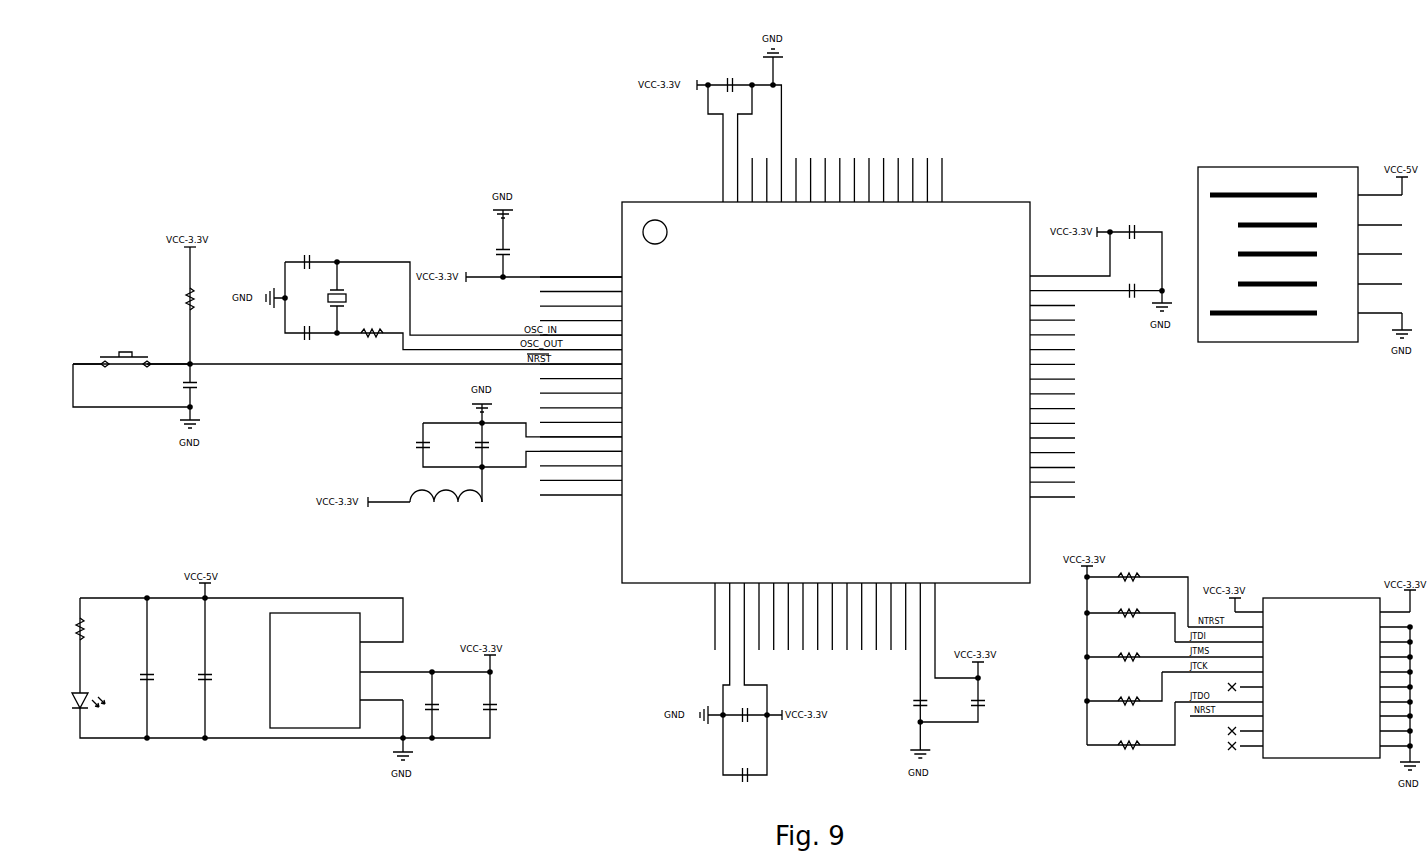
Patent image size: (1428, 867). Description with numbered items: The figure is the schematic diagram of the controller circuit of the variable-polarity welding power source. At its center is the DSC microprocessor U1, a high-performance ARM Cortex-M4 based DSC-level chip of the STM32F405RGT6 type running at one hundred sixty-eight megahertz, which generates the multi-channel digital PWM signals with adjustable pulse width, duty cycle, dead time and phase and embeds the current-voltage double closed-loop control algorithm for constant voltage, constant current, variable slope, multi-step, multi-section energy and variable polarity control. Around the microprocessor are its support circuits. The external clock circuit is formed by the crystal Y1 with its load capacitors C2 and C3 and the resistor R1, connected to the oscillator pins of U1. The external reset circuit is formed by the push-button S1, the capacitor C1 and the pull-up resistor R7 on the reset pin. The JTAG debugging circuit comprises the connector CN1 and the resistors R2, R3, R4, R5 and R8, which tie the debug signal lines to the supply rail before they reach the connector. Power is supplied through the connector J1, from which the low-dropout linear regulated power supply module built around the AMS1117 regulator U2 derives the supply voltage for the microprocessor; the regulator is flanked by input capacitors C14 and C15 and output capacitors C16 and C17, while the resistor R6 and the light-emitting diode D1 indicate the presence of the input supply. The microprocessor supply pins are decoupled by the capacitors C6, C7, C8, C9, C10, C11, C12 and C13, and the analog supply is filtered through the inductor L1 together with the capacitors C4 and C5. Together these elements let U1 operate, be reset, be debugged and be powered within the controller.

The DSC microprocessor U1 is at (820, 391).
The AMS1117 low-dropout linear regulator U2 is at (311, 670).
The mini-USB-B connector J1 is at (1299, 256).
The JTAG debugging connector CN1 is at (1248, 680).
The reset switch S1 is at (131, 361).
The crystal Y1 is at (344, 297).
The inductor L1 is at (446, 494).
The LED D1 is at (98, 700).
The clock circuit resistor R1 is at (372, 328).
The JTAG resistor R2 is at (1129, 608).
The JTAG resistor R3 is at (1129, 652).
The JTAG resistor R4 is at (1129, 696).
The JTAG resistor R5 is at (1129, 740).
The resistor R6 is at (87, 629).
The reset circuit resistor R7 is at (197, 305).
The JTAG resistor R8 is at (1129, 572).
The reset capacitor C1 is at (196, 385).
The clock circuit capacitor C2 is at (306, 254).
The capacitor C3 is at (306, 326).
The capacitor C4 is at (429, 445).
The capacitor C5 is at (488, 445).
The capacitor C6 is at (509, 243).
The capacitor C7 is at (729, 77).
The capacitor C8 is at (745, 707).
The capacitor C9 is at (743, 767).
The capacitor C10 is at (930, 703).
The capacitor C11 is at (988, 703).
The capacitor C12 is at (1134, 224).
The capacitor C13 is at (1127, 283).
The capacitor C14 is at (155, 677).
The electrolytic capacitor C15 is at (216, 677).
The electrolytic capacitor C16 is at (444, 707).
The capacitor C17 is at (498, 707).